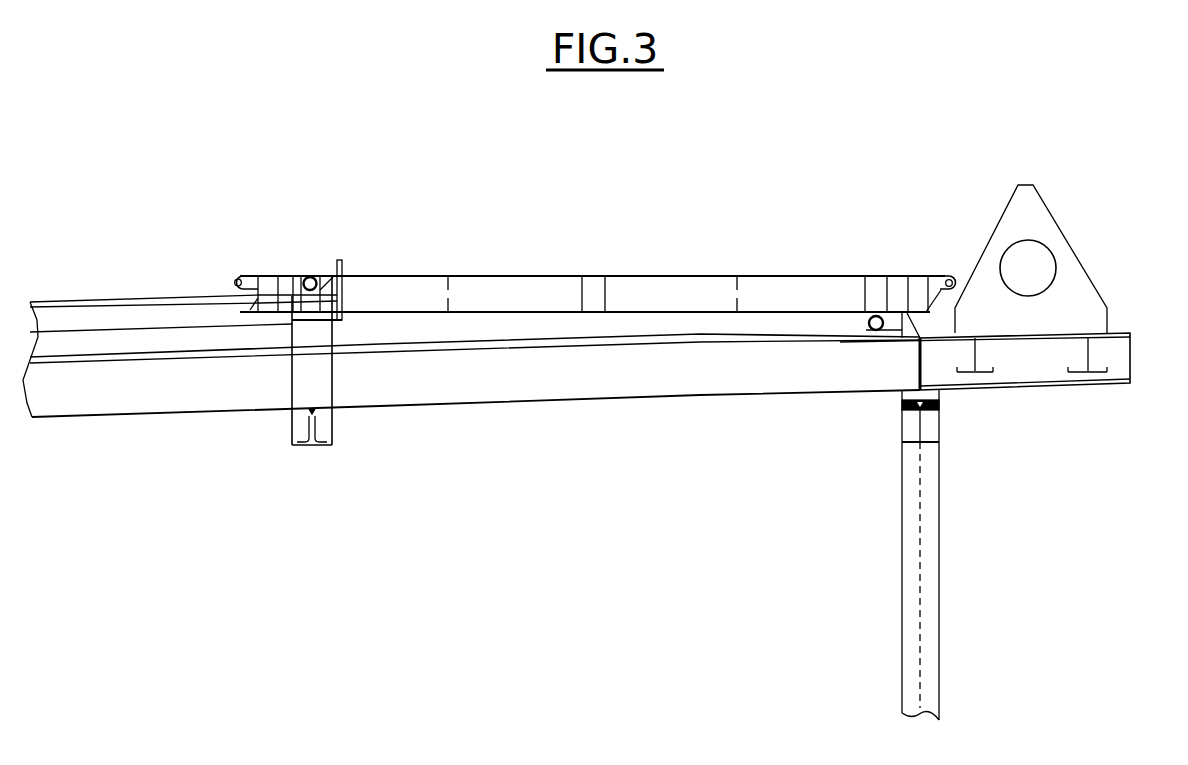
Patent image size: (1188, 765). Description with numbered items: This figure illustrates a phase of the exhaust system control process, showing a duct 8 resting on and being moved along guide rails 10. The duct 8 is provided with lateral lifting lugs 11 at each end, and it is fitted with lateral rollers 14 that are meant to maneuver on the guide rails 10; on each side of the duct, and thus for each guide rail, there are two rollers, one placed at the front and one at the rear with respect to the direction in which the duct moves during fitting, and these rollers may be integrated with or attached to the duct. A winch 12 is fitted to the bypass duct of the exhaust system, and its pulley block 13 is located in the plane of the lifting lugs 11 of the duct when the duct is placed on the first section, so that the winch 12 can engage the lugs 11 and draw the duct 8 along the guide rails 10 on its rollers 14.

The duct 8 is at (623, 252).
The guide rails 10 is at (582, 398).
The lateral lifting lugs 11 is at (237, 275).
The winch 12 is at (1093, 282).
The pulley block 13 is at (1056, 253).
The lateral rollers 14 is at (312, 275).